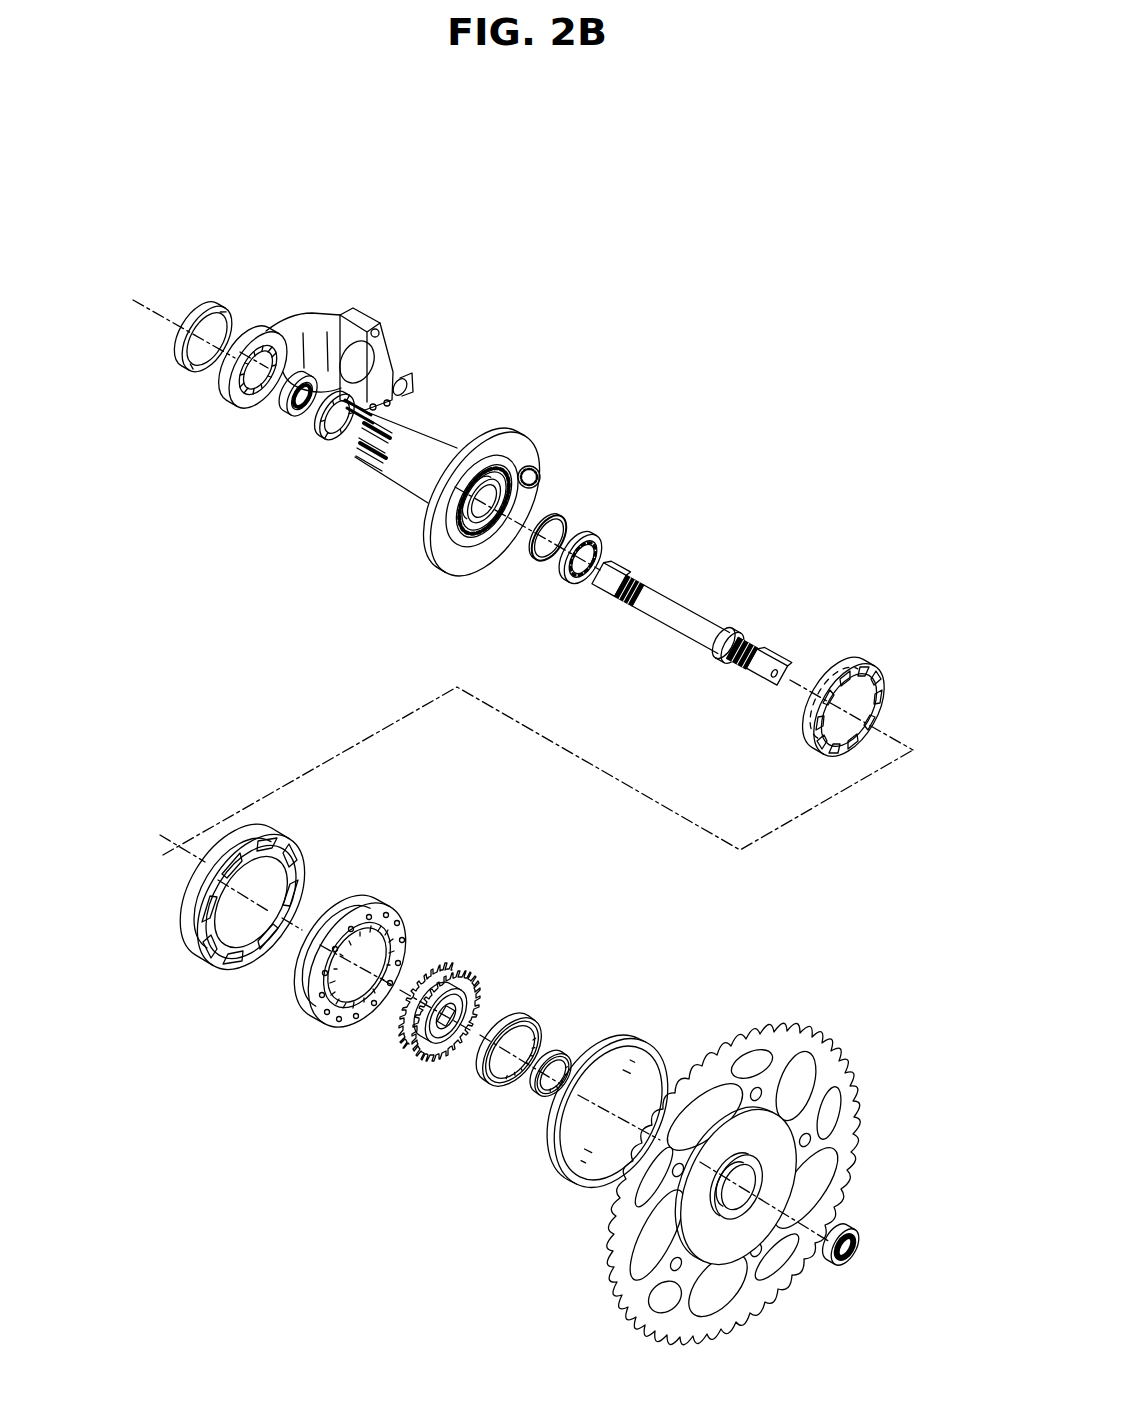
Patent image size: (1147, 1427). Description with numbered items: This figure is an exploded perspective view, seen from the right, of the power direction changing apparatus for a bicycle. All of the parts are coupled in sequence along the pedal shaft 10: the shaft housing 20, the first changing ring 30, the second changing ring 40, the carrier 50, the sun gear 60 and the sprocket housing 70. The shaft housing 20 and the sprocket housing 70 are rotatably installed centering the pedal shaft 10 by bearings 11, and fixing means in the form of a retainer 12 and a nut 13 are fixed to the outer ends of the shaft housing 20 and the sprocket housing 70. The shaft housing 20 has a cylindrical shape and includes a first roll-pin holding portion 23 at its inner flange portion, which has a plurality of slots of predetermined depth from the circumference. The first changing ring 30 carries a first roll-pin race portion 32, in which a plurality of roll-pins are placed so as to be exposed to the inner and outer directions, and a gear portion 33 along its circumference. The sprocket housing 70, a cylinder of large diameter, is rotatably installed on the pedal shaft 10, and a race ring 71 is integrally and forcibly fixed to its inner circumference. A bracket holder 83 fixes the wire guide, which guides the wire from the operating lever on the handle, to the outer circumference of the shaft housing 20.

The pedal shaft 10 is at (680, 603).
The bearings 11 is at (589, 536).
The retainer 12 is at (325, 442).
The nut 13 is at (193, 372).
The shaft housing 20 is at (404, 461).
The first roll-pin holding portion 23 is at (458, 530).
The first changing ring 30 is at (876, 667).
The first roll-pin race portion 32 is at (888, 700).
The gear portion 33 is at (875, 668).
The second changing ring 40 is at (188, 970).
The carrier 50 is at (327, 1040).
The sun gear 60 is at (417, 1070).
The sprocket housing 70 is at (804, 1017).
The race ring 71 is at (563, 1170).
The bracket holder 83 is at (325, 318).